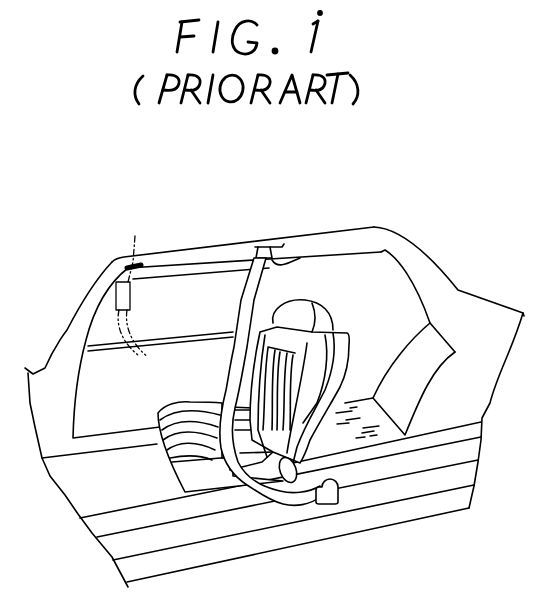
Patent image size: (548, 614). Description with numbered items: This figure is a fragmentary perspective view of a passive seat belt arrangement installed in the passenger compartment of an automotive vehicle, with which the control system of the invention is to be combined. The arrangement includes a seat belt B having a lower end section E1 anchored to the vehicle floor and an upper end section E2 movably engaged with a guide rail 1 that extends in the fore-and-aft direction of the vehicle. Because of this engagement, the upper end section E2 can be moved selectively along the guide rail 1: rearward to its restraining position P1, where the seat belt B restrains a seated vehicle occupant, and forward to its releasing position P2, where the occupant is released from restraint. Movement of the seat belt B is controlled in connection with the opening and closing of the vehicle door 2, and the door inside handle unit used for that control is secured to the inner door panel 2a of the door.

The guide rail 1 is at (193, 252).
The vehicle door 2 is at (100, 383).
The inner door panel 2a is at (182, 352).
The restraining position P1 is at (270, 246).
The releasing position P2 is at (132, 284).
The lower end section E1 is at (334, 505).
The upper end section E2 is at (274, 277).
The seat belt B is at (235, 461).